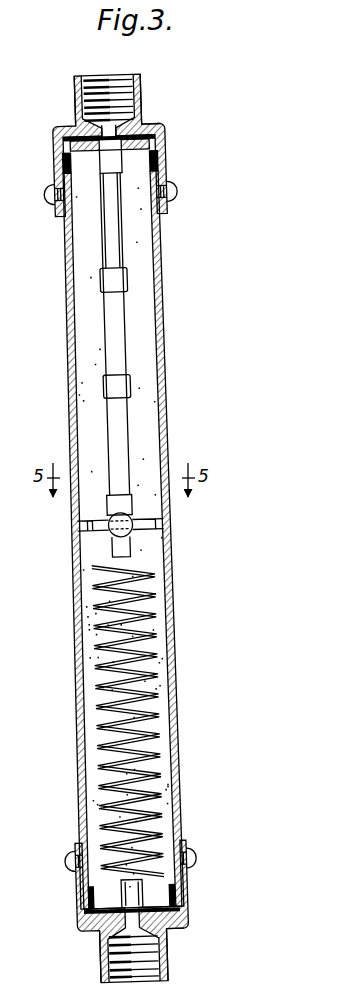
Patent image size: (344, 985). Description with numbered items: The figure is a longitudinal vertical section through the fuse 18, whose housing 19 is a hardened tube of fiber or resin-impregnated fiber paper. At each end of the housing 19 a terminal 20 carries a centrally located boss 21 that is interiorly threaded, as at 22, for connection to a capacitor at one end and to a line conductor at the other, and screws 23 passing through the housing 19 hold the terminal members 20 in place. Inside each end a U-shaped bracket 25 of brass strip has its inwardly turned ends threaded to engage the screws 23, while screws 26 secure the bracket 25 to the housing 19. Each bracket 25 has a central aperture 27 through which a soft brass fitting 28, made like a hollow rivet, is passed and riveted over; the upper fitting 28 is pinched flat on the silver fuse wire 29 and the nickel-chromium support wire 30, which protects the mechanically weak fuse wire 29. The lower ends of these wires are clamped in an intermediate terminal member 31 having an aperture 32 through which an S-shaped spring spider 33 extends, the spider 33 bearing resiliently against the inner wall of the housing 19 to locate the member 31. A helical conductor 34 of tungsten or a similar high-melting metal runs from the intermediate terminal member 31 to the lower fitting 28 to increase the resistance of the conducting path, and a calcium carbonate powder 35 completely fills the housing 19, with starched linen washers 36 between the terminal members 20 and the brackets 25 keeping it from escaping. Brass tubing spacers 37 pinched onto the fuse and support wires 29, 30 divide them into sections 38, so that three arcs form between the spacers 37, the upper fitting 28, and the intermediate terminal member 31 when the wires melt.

The fuse 18 is at (197, 272).
The housing 19 is at (67, 358).
The terminal 20 is at (167, 172).
The boss 21 is at (80, 82).
The interior threads 22 is at (123, 86).
The screws 23 is at (52, 193).
The U-shaped bracket 25 is at (58, 142).
The screws 26 is at (64, 160).
The aperture 27 is at (78, 133).
The fitting 28 is at (157, 146).
The fuse wire 29 is at (122, 216).
The support wire 30 is at (107, 243).
The intermediate terminal member 31 is at (117, 508).
The aperture 32 is at (162, 520).
The S-shaped spring spider 33 is at (97, 532).
The conductor 34 is at (147, 613).
The powder 35 is at (87, 638).
The starched linen washers 36 is at (150, 128).
The spacers 37 is at (108, 281).
The sections 38 is at (132, 232).